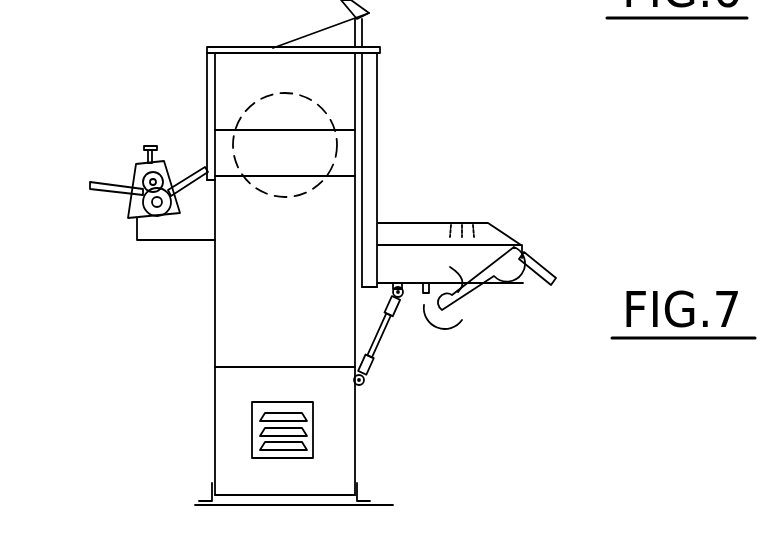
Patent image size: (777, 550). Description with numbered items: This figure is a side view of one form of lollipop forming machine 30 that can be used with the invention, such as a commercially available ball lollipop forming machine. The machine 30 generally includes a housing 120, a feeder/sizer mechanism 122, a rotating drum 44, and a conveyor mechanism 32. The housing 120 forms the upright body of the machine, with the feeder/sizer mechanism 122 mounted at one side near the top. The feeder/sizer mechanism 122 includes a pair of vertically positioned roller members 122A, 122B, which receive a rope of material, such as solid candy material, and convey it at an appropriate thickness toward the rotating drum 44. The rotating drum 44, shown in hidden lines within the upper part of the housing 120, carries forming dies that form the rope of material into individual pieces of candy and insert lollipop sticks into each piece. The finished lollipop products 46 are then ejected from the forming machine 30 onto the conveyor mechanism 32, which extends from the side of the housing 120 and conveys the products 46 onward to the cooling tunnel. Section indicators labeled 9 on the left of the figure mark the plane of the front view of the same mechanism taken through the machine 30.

The section line 9- 9 is at (80, 0).
The lollipop forming machine 30 is at (212, 414).
The conveyor mechanism 32 is at (478, 300).
The rotating drum 44 is at (340, 149).
The lollipop products 46 is at (477, 211).
The housing 120 is at (225, 305).
The feeder/sizer mechanism 122 is at (152, 181).
The roller member 122A is at (134, 156).
The roller member 122B is at (157, 208).